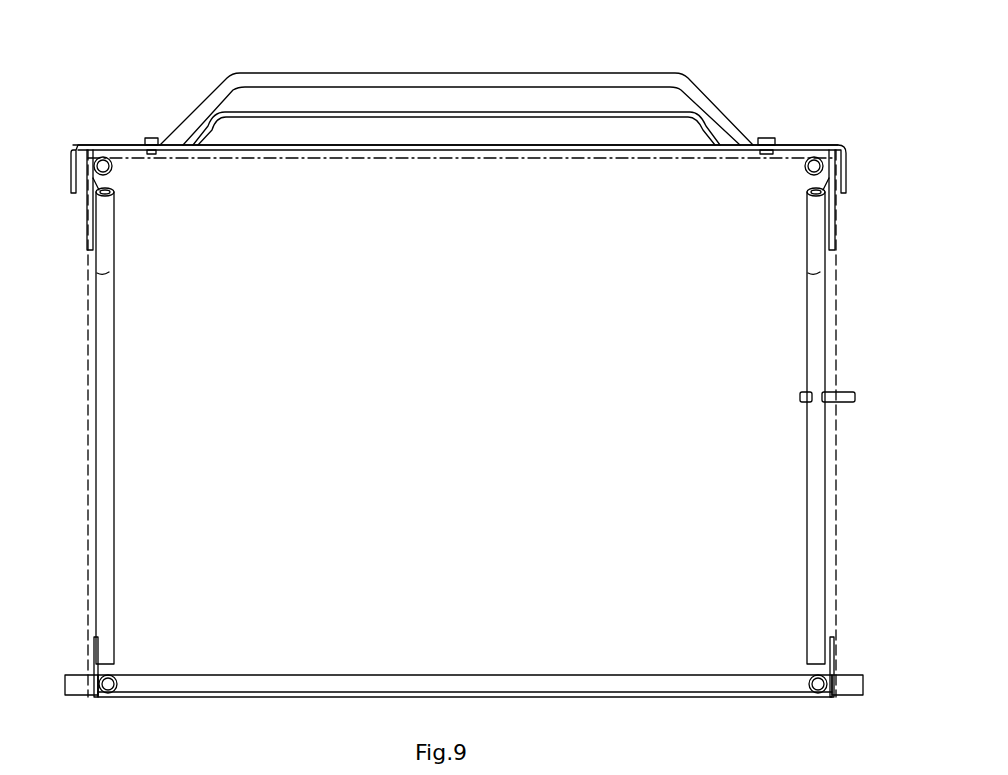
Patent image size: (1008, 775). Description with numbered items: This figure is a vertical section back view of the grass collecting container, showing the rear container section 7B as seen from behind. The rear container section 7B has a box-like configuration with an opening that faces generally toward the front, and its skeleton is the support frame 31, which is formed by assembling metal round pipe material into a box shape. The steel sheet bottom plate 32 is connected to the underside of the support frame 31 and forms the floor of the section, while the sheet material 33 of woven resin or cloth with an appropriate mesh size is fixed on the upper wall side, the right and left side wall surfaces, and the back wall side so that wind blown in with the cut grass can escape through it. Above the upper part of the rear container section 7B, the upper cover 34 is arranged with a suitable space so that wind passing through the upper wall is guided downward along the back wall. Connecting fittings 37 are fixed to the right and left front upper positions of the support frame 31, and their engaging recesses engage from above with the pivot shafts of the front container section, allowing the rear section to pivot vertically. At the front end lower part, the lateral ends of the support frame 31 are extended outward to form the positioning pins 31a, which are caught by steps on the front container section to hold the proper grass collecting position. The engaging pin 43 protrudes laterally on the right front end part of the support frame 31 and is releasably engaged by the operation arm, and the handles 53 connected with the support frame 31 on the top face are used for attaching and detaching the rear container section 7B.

The rear container section 7B is at (803, 145).
The handle 53 is at (455, 78).
The upper cover 34 is at (327, 113).
The sheet material 33 is at (88, 505).
The connecting fitting 37 is at (87, 200).
The support frame 31 is at (105, 250).
The bottom plate 32 is at (462, 692).
The positioning pin 31a is at (72, 683).
The engaging pin 43 is at (845, 402).